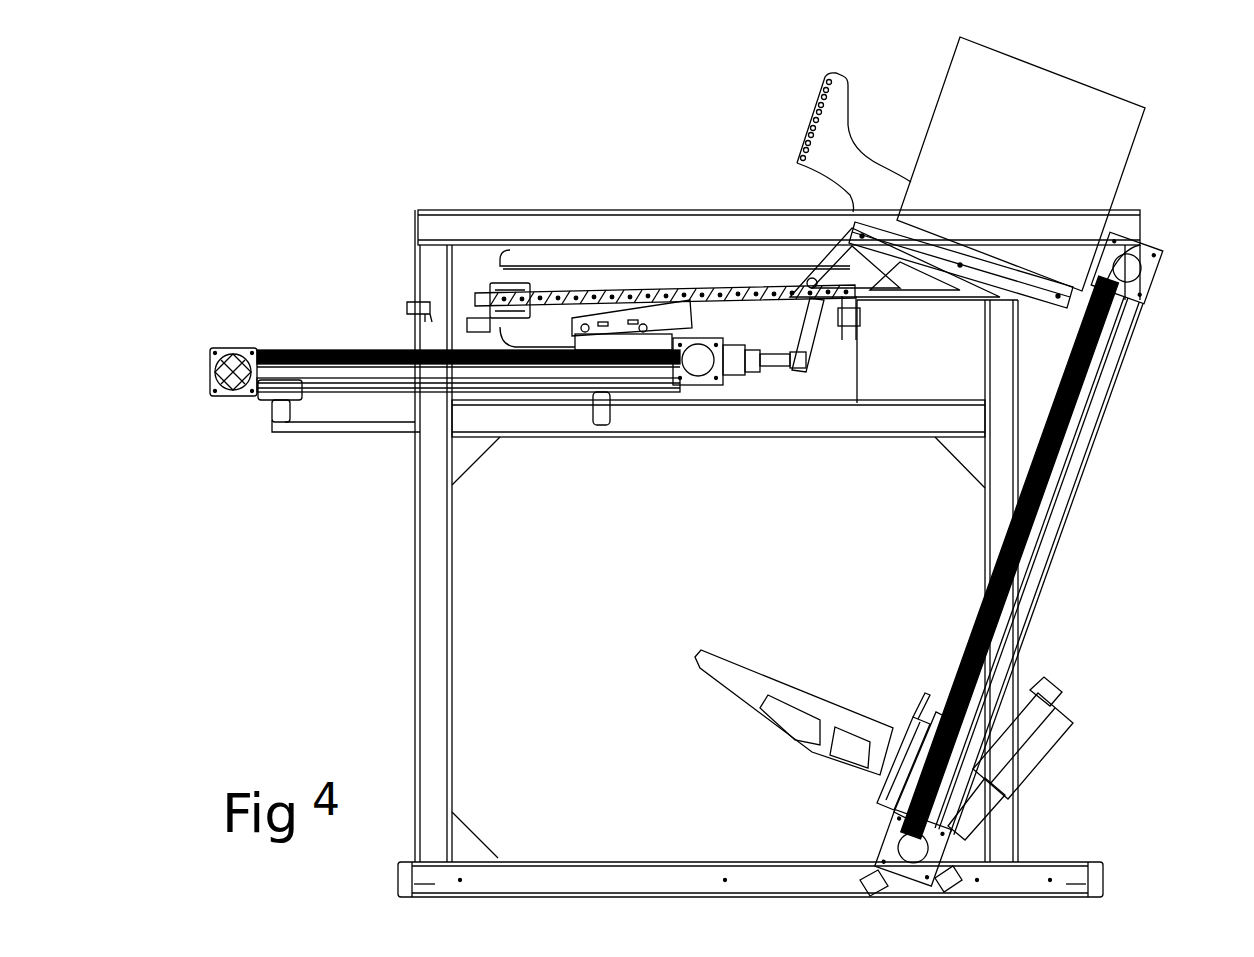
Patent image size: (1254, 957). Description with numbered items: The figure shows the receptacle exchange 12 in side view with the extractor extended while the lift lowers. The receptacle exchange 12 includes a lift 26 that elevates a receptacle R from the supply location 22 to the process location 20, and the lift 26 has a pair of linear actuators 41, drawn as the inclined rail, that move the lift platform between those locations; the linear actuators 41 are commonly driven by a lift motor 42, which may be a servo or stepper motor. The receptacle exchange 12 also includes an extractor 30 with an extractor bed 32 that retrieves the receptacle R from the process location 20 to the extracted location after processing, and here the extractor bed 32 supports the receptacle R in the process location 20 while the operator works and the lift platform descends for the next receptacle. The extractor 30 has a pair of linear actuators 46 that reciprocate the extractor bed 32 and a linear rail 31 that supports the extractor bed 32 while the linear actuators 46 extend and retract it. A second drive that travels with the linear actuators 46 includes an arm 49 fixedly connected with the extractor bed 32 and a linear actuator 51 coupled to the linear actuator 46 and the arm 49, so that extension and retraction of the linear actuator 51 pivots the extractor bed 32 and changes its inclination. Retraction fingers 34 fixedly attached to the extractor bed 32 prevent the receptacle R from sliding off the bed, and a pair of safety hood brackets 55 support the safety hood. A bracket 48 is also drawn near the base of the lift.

The receptacle exchange 12 is at (503, 124).
The process location 20 is at (1050, 252).
The supply location 22 is at (920, 684).
The lift 26 is at (1106, 482).
The extractor 30 is at (626, 277).
The linear rail 31 is at (655, 292).
The extractor bed 32 is at (920, 303).
The retraction fingers 34 is at (1130, 246).
The linear actuators 41 is at (1050, 552).
The lift motor 42 is at (1050, 703).
The linear actuators 46 is at (500, 380).
The support bracket 48 is at (763, 673).
The arm 49 is at (820, 336).
The linear actuator 51 is at (738, 372).
The safety hood brackets 55 is at (808, 130).
The receptacle R is at (1130, 147).